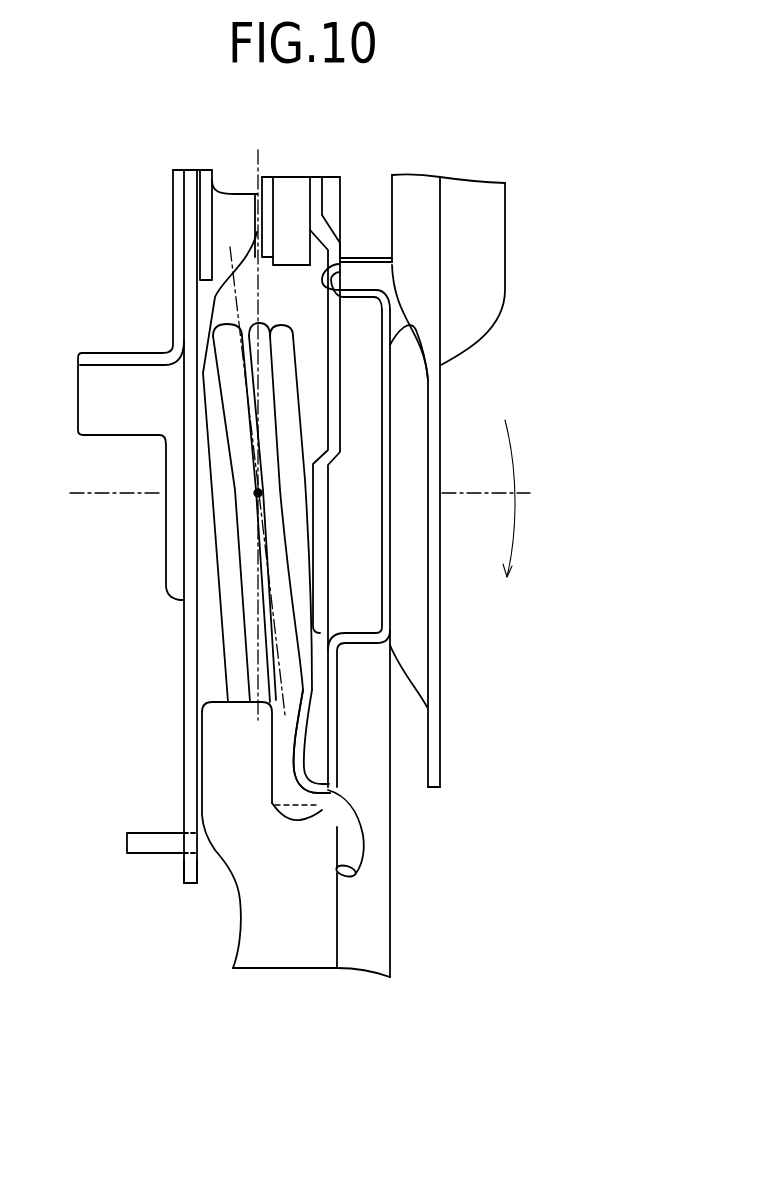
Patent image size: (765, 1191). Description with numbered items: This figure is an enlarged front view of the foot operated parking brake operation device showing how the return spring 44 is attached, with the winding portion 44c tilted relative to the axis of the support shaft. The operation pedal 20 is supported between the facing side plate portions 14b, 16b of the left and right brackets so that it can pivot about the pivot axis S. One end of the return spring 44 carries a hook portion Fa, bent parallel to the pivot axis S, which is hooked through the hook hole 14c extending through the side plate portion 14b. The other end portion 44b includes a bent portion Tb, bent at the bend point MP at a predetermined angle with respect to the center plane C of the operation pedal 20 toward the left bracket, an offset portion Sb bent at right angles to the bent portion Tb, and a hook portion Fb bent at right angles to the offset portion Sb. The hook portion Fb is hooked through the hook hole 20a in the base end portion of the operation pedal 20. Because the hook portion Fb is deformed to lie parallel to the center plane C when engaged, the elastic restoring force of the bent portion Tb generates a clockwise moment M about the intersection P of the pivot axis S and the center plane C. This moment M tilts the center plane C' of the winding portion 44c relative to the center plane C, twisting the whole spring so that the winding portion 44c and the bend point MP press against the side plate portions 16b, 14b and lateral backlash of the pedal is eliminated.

The center plane C is at (223, 419).
The center plane of the winding portion C' is at (186, 481).
The intersection P is at (255, 495).
The pivot axis S is at (309, 493).
The moment M is at (505, 485).
The bend point MP is at (307, 627).
The bent portion Tb is at (287, 748).
The offset portion Sb is at (303, 775).
The hook portion Fb is at (360, 847).
The end portion 44b is at (536, 738).
The return spring 44 is at (211, 593).
The winding portion 44c is at (227, 568).
The side plate portion 14b is at (184, 797).
The hook hole 14c is at (190, 860).
The hook portion Fa is at (130, 843).
The side plate portion 16b is at (418, 670).
The operation pedal 20 is at (302, 958).
The hook hole 20a is at (275, 805).